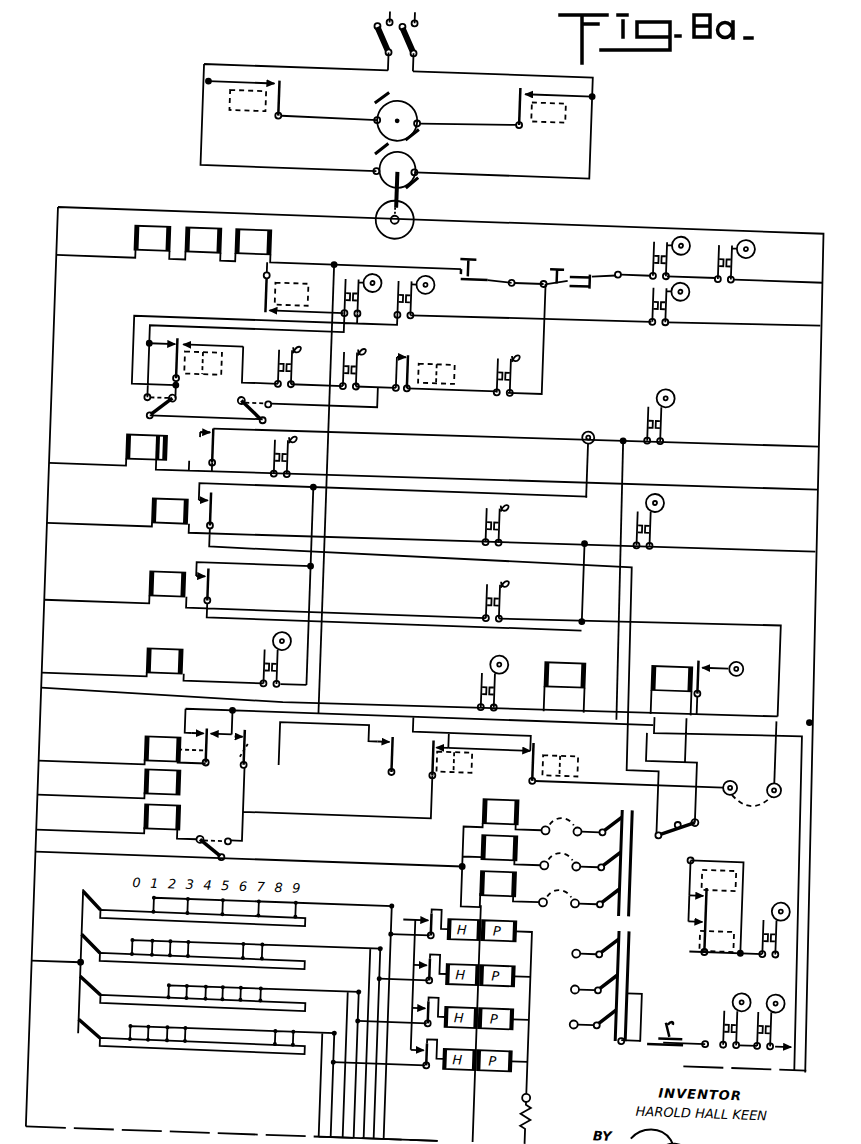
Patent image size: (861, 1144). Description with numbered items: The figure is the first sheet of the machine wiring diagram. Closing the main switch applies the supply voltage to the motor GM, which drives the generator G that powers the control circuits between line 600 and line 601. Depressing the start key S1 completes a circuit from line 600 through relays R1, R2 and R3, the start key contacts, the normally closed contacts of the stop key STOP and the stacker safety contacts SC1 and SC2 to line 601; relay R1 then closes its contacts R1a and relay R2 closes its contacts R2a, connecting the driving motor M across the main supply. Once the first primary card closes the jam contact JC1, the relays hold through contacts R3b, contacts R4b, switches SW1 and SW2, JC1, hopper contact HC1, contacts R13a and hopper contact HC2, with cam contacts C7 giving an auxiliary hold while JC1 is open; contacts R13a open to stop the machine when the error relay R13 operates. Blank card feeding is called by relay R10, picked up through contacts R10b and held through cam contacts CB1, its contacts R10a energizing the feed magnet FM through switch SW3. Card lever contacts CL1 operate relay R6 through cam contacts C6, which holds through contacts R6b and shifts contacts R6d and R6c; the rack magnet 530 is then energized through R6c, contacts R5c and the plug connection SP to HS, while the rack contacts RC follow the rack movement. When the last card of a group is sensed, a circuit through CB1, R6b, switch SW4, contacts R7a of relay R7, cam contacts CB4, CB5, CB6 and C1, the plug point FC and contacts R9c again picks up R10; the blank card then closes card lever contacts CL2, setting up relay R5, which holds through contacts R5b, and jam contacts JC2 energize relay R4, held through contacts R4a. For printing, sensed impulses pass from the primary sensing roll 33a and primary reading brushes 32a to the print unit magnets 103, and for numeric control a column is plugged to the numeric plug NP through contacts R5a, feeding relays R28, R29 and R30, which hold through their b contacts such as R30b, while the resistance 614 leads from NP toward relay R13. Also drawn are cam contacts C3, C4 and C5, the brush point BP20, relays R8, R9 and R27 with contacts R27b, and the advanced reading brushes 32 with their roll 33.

The contacts R1a is at (276, 72).
The relay R1 is at (244, 104).
The machine driving motor M is at (404, 99).
The contacts R2a is at (516, 71).
The relay R2 is at (538, 105).
The motor GM is at (407, 148).
The generator G is at (409, 201).
The relay R3 is at (302, 275).
The line 600 is at (58, 302).
The line 601 is at (794, 356).
The contacts R3b is at (267, 297).
The clutch magnet C5 is at (350, 266).
The clutch magnet C4 is at (402, 266).
The start switch S1 is at (494, 250).
The stop key STOP is at (585, 265).
The safety contacts SC1 is at (656, 219).
The safety contacts SC2 is at (722, 220).
The cam contacts C7 is at (656, 285).
The contacts R4b is at (184, 334).
The relay R4 is at (208, 369).
The primary jam contact JC1 is at (298, 348).
The safety contacts HC1 is at (363, 360).
The contacts R13a is at (404, 346).
The relay R13 is at (442, 352).
The safety contacts HC2 is at (512, 337).
The switch SW1 is at (150, 397).
The switch SW2 is at (281, 403).
The contacts R4a is at (224, 443).
The jam contacts JC2 is at (305, 438).
The brush contact BP20 is at (592, 410).
The cam contacts CB1 is at (670, 393).
The relay R5 is at (163, 506).
The contacts R5b is at (225, 503).
The card lever contacts CL2 is at (512, 525).
The cam contacts C6 is at (664, 509).
The relay R6 is at (163, 578).
The contacts R6b is at (225, 580).
The card lever contacts CL1 is at (513, 597).
The relay R7 is at (163, 656).
The rack contacts RC is at (278, 662).
The magnet C3 is at (496, 662).
The relay R8 is at (572, 657).
The relay R9 is at (676, 659).
The contacts R9c is at (714, 638).
The plug point FC is at (763, 633).
The relay R10 is at (164, 745).
The contacts R10b is at (201, 728).
The contacts R10a is at (222, 760).
The rack magnet 530 is at (165, 778).
The feed magnet FM is at (166, 815).
The switch SW3 is at (231, 818).
The contacts R6d is at (399, 742).
The contacts R6c is at (421, 759).
The contacts R5c is at (555, 727).
The plug SP is at (745, 758).
The plug HS is at (791, 758).
The switch SW4 is at (724, 790).
The contacts R5a is at (711, 873).
The contacts R7a is at (711, 899).
The cam contacts CB4 is at (787, 892).
The cam contacts C1 is at (684, 1001).
The cam contacts CB6 is at (751, 982).
The cam contacts CB5 is at (786, 982).
The print unit magnets 103 is at (504, 792).
The primary reading brushes 32a is at (625, 810).
The primary sensing roll 33a is at (653, 792).
The contacts 32 is at (638, 933).
The bar 33 is at (644, 1011).
The relay R27 contact b R27b is at (458, 898).
The relay R27 is at (541, 917).
The relay R28 is at (541, 962).
The relay R29 is at (541, 1005).
The relay R30 is at (541, 1047).
The contacts R30b is at (458, 1056).
The numeric plug NP is at (562, 1081).
The resistance 614 is at (560, 1102).